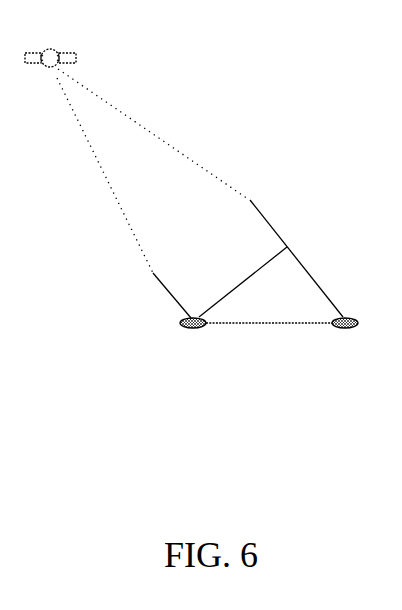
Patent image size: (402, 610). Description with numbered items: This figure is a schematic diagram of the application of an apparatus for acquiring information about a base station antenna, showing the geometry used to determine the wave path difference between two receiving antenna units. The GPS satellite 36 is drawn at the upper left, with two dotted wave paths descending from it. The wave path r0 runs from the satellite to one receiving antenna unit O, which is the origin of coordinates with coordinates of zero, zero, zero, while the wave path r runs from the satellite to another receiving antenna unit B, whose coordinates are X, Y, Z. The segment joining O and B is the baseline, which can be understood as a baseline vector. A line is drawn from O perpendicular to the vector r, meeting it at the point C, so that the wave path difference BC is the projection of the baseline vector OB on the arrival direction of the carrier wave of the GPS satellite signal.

The satellite 36 is at (68, 55).
The wave path r is at (200, 193).
The wave path r0 is at (124, 198).
The point C is at (258, 277).
The receiving antenna unit O is at (193, 351).
The receiving antenna unit B is at (340, 346).